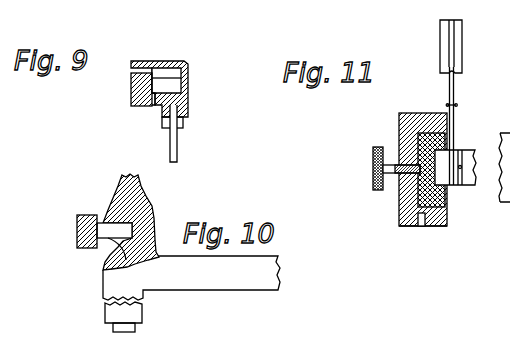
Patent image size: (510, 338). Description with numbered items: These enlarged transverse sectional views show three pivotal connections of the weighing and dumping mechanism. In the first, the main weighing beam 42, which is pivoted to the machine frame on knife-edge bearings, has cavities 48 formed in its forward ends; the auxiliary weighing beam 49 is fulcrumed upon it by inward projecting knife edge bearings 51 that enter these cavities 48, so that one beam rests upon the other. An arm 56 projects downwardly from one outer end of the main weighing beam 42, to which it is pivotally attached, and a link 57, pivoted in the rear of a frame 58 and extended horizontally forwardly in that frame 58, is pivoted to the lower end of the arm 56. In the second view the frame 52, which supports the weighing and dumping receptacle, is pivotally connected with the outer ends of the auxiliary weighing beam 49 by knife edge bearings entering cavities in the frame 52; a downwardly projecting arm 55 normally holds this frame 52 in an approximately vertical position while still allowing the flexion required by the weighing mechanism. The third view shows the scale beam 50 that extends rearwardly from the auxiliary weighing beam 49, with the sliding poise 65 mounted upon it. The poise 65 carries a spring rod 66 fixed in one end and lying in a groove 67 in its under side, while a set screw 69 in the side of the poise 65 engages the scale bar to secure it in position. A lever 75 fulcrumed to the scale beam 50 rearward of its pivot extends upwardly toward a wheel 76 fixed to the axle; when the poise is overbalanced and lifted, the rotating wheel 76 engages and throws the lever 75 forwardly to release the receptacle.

In FIG. 9, the main weighing beam 42 is at (189, 89).
In FIG. 9, the cavities 48 is at (168, 74).
In FIG. 9, the auxiliary weighing beam 49 is at (131, 88).
In FIG. 10, the auxiliary weighing beam 49 is at (77, 233).
In FIG. 9, the knife edge bearings 51 is at (162, 90).
In FIG. 9, the arm 56 is at (178, 143).
In FIG. 10, the frame 52 is at (140, 197).
In FIG. 10, the frame 58 is at (103, 221).
In FIG. 10, the link 57 is at (116, 250).
In FIG. 10, the arm 55 is at (135, 327).
In FIG. 11, the wheel 76 is at (457, 53).
In FIG. 11, the lever 75 is at (455, 90).
In FIG. 11, the sliding poise 65 is at (423, 162).
In FIG. 11, the scale beam 50 is at (445, 188).
In FIG. 11, the set screw 69 is at (373, 173).
In FIG. 11, the groove 67 is at (405, 223).
In FIG. 11, the spring rod 66 is at (422, 227).